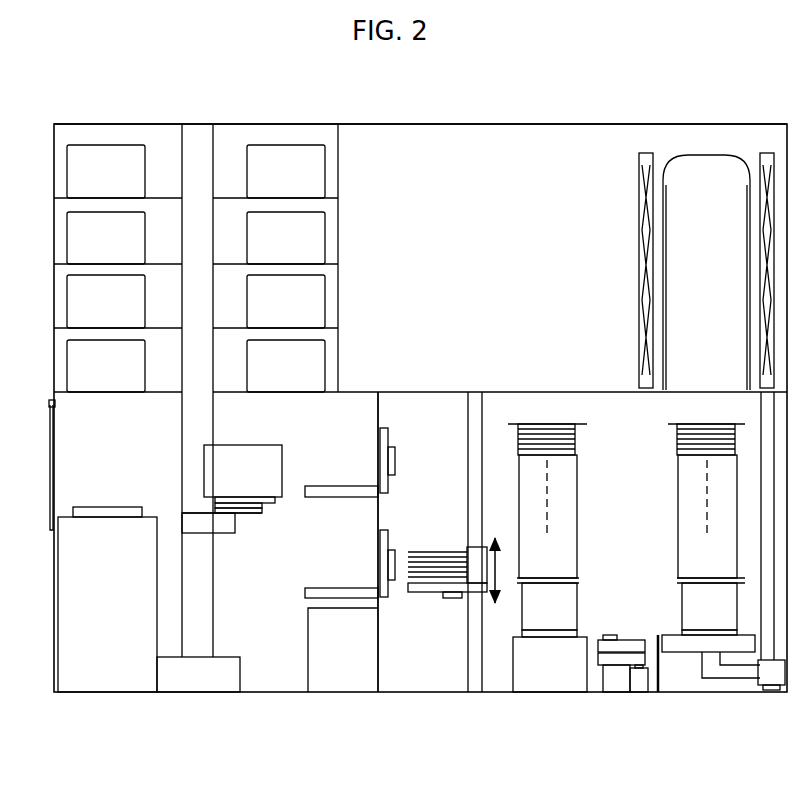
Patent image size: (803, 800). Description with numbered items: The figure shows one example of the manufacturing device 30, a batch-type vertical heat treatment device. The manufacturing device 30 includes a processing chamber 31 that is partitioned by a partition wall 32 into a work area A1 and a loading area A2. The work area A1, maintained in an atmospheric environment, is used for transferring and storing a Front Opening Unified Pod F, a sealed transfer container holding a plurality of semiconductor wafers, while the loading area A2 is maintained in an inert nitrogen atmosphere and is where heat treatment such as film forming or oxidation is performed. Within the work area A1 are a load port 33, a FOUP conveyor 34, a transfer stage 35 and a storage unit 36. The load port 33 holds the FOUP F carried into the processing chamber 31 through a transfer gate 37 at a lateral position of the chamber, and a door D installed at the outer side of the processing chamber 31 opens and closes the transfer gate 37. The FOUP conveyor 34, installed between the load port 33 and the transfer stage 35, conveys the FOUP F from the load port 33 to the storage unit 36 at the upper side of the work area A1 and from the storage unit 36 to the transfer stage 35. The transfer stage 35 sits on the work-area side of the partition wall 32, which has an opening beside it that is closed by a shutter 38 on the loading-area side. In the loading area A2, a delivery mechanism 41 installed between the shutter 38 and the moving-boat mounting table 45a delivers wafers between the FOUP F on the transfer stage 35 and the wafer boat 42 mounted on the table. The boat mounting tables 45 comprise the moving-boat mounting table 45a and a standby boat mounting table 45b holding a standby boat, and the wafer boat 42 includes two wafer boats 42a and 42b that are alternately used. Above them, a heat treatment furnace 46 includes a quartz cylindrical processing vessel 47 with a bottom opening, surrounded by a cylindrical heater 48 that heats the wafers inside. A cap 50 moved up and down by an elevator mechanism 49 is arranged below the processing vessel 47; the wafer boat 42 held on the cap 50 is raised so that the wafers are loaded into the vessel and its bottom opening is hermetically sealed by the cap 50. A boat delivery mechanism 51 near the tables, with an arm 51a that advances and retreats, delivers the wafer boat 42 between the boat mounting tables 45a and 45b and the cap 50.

The manufacturing device 30 is at (604, 119).
The processing chamber 31 is at (488, 124).
The partition wall 32 is at (380, 680).
The load port 33 is at (111, 506).
The FOUP conveyor 34 is at (226, 610).
The transfer stage 35 is at (292, 563).
The storage unit 36 is at (46, 245).
The transfer gate 37 is at (50, 404).
The shutter 38 is at (391, 531).
The delivery mechanism 41 is at (430, 599).
The wafer boat 42 is at (626, 530).
The wafer boat 42a is at (602, 543).
The wafer boat 42b is at (678, 512).
The boat mounting tables 45 is at (574, 712).
The moving-boat mounting table 45a is at (535, 692).
The standby boat mounting table 45b is at (617, 706).
The heat treatment furnace 46 is at (669, 406).
The processing vessel 47 is at (662, 257).
The cylindrical heater 48 is at (640, 204).
The elevator mechanism 49 is at (708, 684).
The cap 50 is at (677, 635).
The boat delivery mechanism 51 is at (647, 692).
The arm 51a is at (618, 637).
The door D is at (50, 472).
The Front Opening Unified Pod (FOUP) F is at (241, 444).
The work area A1 is at (268, 685).
The loading area A2 is at (434, 683).